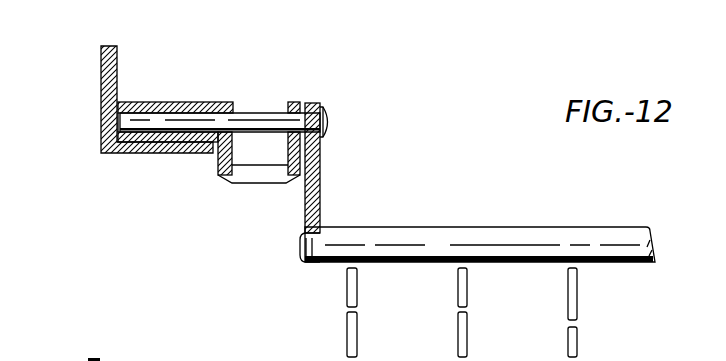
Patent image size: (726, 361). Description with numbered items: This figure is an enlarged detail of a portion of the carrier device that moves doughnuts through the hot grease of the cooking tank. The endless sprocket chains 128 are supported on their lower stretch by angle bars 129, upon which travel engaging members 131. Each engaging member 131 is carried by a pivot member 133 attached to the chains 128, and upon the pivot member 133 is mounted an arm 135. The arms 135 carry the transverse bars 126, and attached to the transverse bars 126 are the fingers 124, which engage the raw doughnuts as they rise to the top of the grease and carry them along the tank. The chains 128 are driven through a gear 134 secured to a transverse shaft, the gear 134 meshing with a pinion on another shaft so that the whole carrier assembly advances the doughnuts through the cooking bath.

The fingers 124 is at (461, 327).
The transverse bars 126 is at (410, 233).
The endless sprocket chains 128 is at (255, 177).
The angle bars 129 is at (127, 153).
The engaging members 131 is at (177, 110).
The pivot members 133 is at (248, 130).
The gear 134 is at (690, 353).
The arms 135 is at (322, 165).